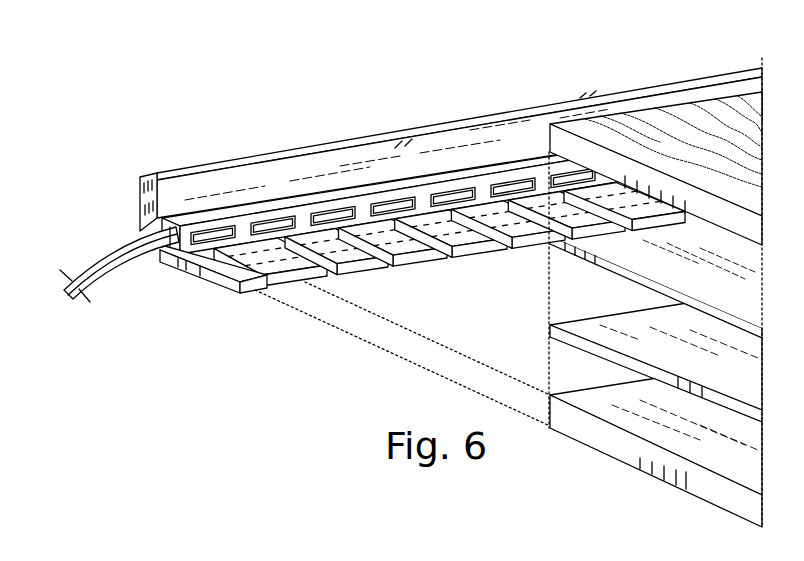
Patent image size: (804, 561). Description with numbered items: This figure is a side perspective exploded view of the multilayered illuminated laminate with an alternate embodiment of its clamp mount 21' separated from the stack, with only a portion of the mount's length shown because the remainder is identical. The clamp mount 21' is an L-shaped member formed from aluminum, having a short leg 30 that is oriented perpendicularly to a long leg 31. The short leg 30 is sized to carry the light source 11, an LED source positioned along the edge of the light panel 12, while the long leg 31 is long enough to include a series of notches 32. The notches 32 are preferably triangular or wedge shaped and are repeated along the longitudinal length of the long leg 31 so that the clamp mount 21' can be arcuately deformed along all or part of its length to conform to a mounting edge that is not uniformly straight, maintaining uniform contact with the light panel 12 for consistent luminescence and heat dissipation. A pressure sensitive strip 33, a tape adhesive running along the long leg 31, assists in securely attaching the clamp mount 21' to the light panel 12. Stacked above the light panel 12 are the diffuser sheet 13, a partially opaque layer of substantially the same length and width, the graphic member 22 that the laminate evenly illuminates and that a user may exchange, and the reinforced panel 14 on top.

The clamp mount 21' is at (459, 143).
The short leg 30 is at (140, 194).
The light source 11 is at (270, 203).
The reinforced panel 14 is at (595, 156).
The long leg 31 is at (208, 280).
The pressure sensitive strip 33 is at (362, 270).
The notches 32 is at (392, 270).
The graphic member 22 is at (566, 250).
The diffuser sheet 13 is at (546, 325).
The light panel 12 is at (593, 444).